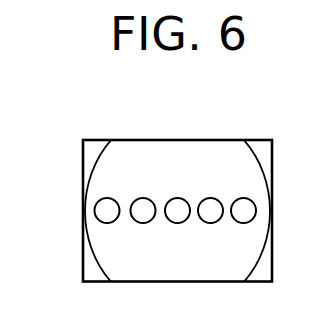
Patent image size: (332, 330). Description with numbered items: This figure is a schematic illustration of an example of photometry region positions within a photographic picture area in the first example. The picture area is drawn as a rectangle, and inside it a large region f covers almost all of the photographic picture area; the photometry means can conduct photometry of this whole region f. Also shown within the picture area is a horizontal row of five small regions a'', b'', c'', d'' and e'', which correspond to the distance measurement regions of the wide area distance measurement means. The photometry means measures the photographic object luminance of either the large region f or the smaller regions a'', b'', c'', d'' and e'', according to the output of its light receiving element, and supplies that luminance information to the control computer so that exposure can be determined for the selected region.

The photometry region a'' is at (241, 151).
The photometry region b'' is at (209, 151).
The photometry region c'' is at (176, 151).
The photometry region d'' is at (141, 151).
The photometry region e'' is at (104, 151).
The region f is at (110, 243).